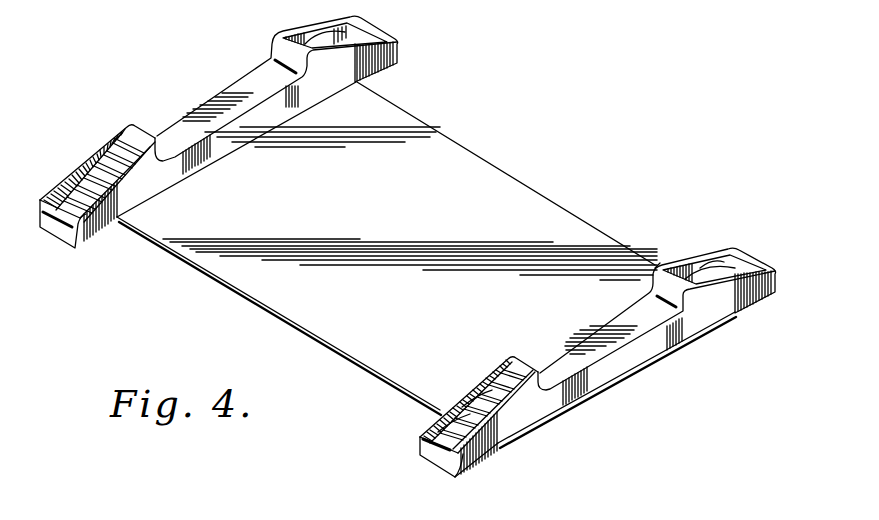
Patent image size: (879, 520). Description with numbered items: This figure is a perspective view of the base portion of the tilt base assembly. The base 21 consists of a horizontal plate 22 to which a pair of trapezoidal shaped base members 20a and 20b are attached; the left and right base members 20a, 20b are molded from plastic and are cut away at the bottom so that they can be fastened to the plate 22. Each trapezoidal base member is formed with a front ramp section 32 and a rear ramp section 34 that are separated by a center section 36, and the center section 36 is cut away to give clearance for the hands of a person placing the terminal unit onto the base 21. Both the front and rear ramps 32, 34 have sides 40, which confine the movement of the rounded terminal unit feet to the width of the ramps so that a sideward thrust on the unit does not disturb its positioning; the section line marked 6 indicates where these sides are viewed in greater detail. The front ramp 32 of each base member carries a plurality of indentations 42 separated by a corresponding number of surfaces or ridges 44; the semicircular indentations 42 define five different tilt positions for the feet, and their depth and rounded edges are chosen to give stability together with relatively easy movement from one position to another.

The left trapezoidal shaped base member 20a is at (78, 167).
The right trapezoidal shaped base member 20b is at (545, 410).
The base 21 is at (652, 368).
The horizontal plate 22 is at (197, 268).
The front ramp section 32 is at (492, 392).
The rear ramp section 34 is at (665, 262).
The center section 36 is at (575, 337).
The sides 40 is at (477, 398).
The indentations 42 is at (503, 372).
The surfaces or ridges 44 is at (514, 360).
The section line 6- 6 is at (793, 223).